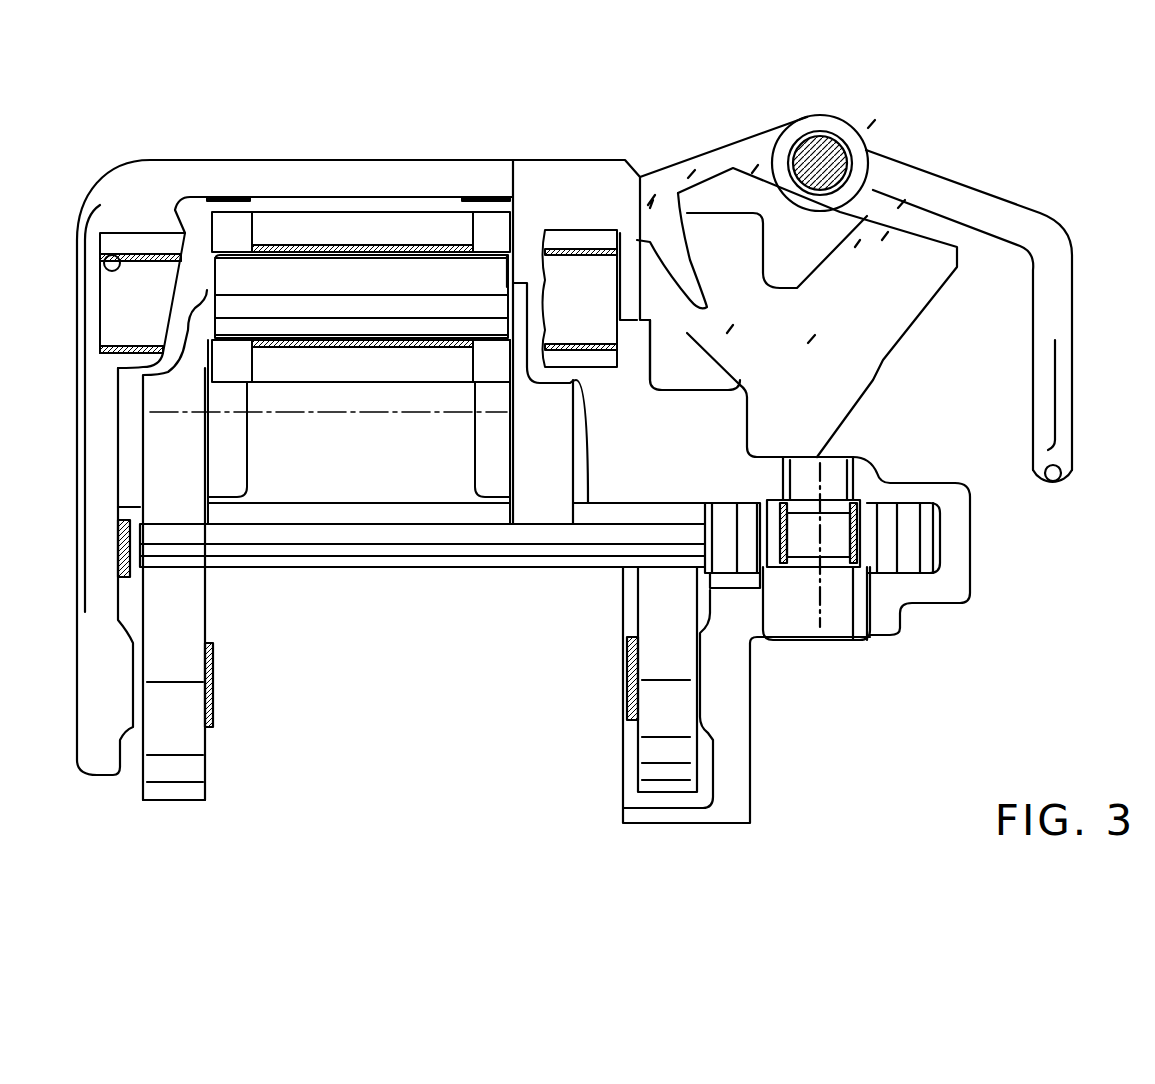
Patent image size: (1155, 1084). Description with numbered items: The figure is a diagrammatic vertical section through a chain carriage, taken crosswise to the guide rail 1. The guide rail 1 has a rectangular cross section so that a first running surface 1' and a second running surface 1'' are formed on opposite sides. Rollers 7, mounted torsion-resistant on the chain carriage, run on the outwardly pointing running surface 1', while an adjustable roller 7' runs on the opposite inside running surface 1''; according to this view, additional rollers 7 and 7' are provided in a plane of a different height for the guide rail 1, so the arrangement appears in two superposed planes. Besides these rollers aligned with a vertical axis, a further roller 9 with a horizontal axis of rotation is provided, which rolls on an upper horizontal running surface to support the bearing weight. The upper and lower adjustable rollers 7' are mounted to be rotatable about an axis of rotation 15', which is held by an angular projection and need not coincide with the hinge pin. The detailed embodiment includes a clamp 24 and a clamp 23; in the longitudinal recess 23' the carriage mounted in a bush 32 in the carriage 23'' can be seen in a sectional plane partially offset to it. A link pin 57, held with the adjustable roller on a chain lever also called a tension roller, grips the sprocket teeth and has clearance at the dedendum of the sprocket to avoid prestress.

The guide rail 1 is at (422, 585).
The first running surface 1' is at (459, 608).
The second running surface 1'' is at (409, 478).
The roller 7 is at (494, 671).
The adjustable roller 7' is at (415, 474).
The roller 9 is at (947, 593).
The axis of rotation 15' is at (328, 425).
The clamp 23 is at (136, 243).
The longitudinal recess 23' is at (119, 212).
The carriage 23'' is at (111, 273).
The clamp 24 is at (930, 130).
The bush 32 is at (105, 258).
The link pin 57 is at (313, 348).